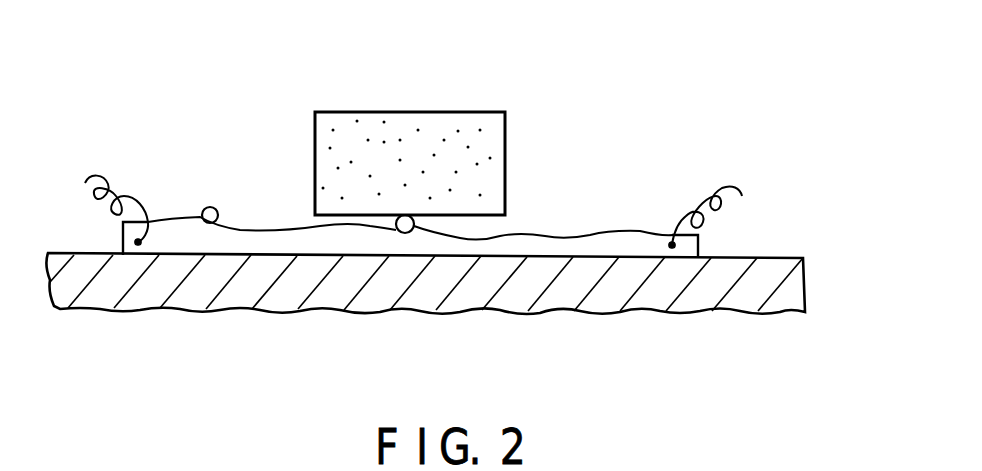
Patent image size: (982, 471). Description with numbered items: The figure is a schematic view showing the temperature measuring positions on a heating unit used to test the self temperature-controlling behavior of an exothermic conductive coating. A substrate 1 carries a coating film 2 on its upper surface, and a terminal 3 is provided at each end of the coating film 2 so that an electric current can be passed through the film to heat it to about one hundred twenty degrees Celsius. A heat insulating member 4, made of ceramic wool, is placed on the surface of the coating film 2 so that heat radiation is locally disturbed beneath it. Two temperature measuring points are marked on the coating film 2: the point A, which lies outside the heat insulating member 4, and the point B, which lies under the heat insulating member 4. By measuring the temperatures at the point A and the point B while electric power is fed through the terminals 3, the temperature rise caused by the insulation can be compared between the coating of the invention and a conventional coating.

The substrate 1 is at (747, 297).
The coating film 2 is at (558, 250).
The terminal 3 is at (124, 193).
The heat insulating member 4 is at (505, 142).
The temperature measuring point A is at (209, 207).
The temperature measuring point B is at (405, 215).